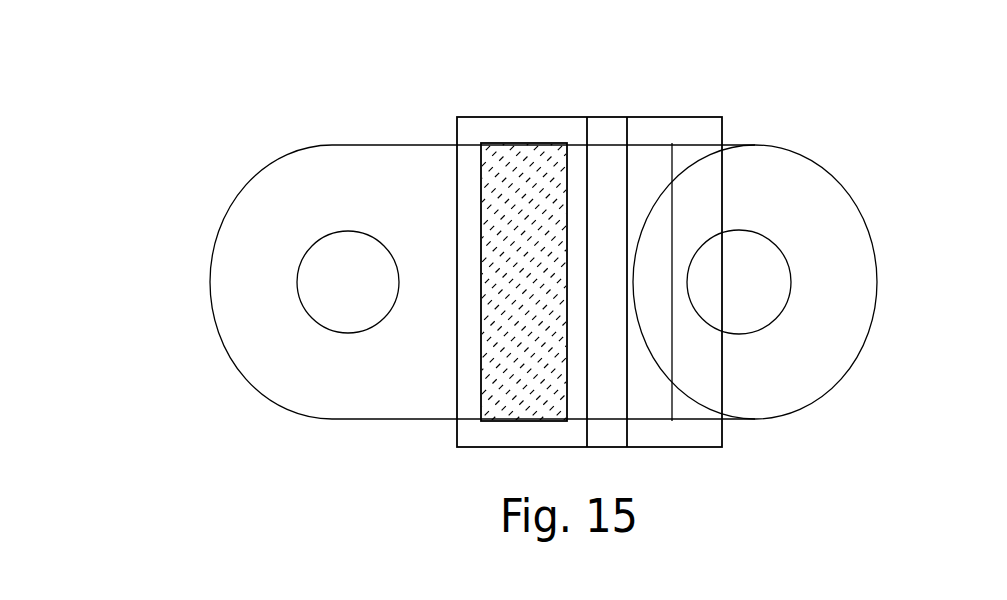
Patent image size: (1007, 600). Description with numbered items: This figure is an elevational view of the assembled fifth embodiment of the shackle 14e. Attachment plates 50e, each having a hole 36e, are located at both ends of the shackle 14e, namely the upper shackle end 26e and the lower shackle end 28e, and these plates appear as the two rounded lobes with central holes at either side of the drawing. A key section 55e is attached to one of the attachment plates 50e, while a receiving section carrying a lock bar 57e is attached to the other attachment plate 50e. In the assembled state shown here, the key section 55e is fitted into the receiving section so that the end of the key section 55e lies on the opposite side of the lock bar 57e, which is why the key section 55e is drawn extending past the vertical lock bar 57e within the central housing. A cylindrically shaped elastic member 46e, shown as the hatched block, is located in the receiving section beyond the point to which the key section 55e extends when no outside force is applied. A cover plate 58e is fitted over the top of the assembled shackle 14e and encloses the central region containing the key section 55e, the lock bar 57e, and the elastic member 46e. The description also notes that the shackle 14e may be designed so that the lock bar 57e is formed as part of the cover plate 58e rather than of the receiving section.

The shackle 14e is at (554, 244).
The upper shackle end 26e is at (227, 348).
The lower shackle end 28e is at (857, 352).
The hole 36e is at (348, 282).
The attachment plate 50e is at (243, 280).
The cover plate 58e is at (505, 128).
The elastic member 46e is at (540, 188).
The lock bar 57e is at (610, 160).
The key section 55e is at (658, 170).